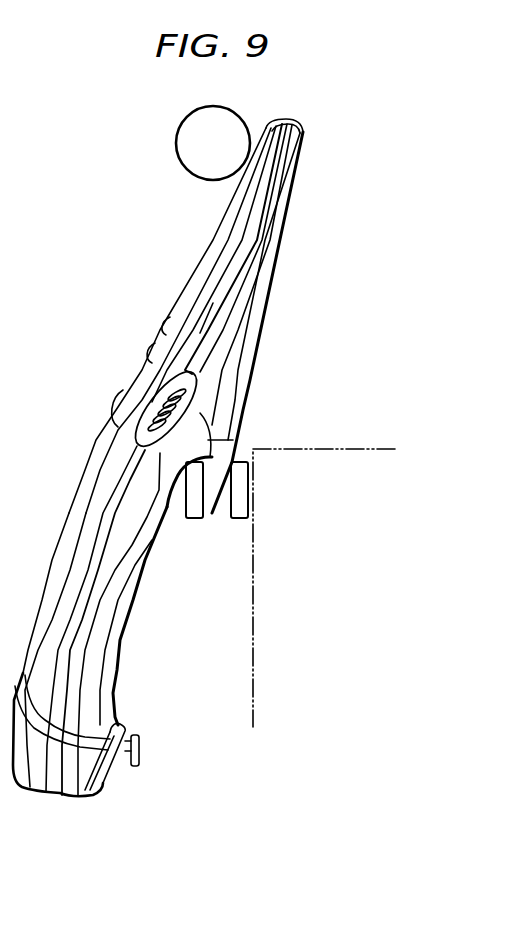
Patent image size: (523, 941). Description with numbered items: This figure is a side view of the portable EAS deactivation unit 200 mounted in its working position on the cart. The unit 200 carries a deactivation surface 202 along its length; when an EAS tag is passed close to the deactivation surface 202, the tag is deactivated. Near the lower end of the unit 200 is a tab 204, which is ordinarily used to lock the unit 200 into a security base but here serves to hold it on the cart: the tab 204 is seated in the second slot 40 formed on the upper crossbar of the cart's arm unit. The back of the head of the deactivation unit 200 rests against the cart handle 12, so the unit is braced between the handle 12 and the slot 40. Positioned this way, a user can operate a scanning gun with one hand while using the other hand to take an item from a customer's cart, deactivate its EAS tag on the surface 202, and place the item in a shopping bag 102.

The cart handle 12 is at (188, 171).
The deactivation surface 202 is at (277, 263).
The portable EAS deactivation unit 200 is at (70, 513).
The shopping bag 102 is at (330, 449).
The second slot 40 is at (190, 519).
The tab 204 is at (208, 518).